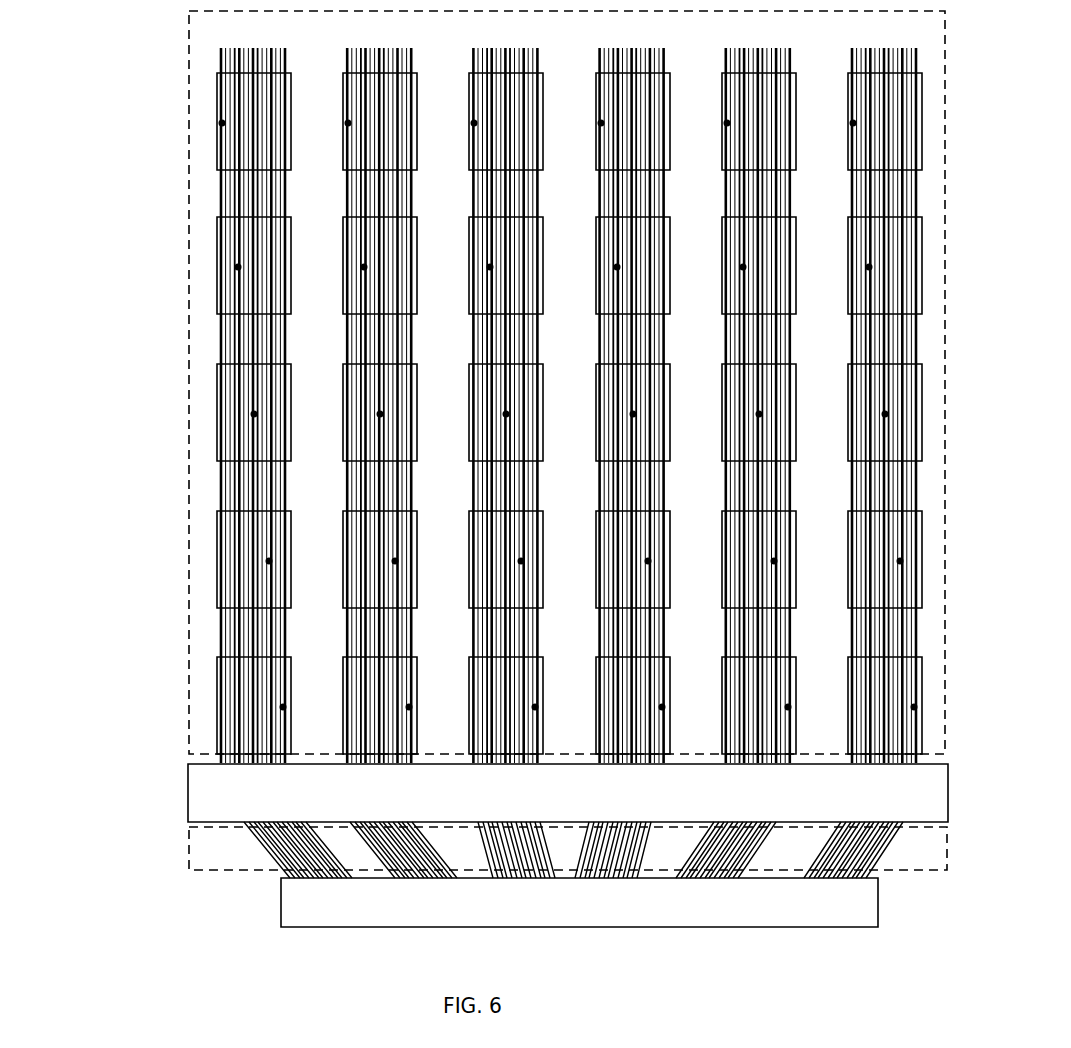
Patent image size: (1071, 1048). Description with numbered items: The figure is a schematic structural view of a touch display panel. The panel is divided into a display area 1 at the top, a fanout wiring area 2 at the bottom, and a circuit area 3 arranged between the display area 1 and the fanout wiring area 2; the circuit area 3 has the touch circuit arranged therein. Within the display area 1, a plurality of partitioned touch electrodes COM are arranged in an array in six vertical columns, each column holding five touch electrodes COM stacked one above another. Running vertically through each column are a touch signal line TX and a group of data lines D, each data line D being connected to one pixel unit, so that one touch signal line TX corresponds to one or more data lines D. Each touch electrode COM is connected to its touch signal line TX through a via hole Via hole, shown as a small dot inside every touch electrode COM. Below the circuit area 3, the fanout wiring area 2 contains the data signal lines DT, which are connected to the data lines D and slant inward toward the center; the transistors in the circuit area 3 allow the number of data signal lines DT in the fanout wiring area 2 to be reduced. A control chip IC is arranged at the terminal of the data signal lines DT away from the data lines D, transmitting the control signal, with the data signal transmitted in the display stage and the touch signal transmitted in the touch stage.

The display area 1 is at (188, 447).
The fanout wiring area 2 is at (189, 860).
The circuit area 3 is at (189, 788).
The touch electrode COM is at (218, 100).
The via hole Via hole is at (222, 123).
The touch signal line TX is at (223, 198).
The data line D is at (227, 630).
The data signal line DT is at (262, 845).
The control chip IC is at (579, 902).